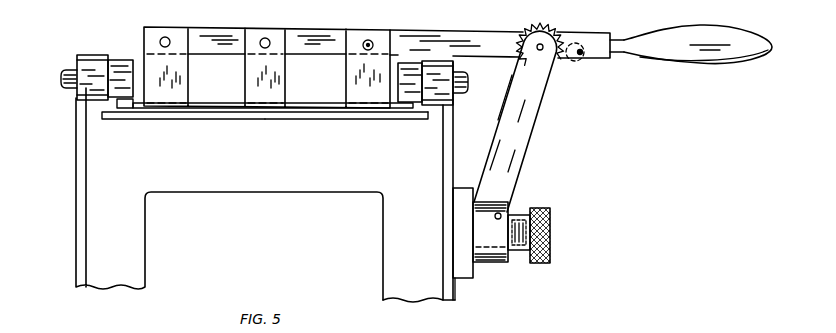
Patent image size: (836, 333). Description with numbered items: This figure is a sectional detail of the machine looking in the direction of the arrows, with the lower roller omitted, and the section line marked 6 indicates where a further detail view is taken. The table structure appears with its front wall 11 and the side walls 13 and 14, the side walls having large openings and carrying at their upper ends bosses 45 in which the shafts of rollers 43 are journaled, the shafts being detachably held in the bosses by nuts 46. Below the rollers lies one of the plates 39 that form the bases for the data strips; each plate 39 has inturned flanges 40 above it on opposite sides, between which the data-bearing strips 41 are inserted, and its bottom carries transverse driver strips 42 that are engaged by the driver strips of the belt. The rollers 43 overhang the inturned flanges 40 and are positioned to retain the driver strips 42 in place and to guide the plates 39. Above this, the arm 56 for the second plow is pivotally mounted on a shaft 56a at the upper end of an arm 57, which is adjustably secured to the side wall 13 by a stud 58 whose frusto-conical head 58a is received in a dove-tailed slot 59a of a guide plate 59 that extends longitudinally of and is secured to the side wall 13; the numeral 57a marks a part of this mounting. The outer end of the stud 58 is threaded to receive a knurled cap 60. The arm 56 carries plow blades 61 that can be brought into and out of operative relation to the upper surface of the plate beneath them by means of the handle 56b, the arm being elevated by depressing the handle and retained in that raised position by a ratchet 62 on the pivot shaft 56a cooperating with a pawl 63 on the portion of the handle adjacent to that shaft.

The section line 6- 6 is at (265, 248).
The front wall 11 is at (456, 294).
The side wall 13 is at (454, 151).
The side wall 14 is at (76, 176).
The plate 39 is at (212, 119).
The inturned flange 40 is at (124, 108).
The data-bearing strip 41 is at (233, 104).
The driver strip 42 is at (312, 115).
The roller 43 is at (119, 60).
The boss 45 is at (96, 55).
The nut 46 is at (62, 86).
The arm 56 is at (328, 31).
The shaft 56a is at (548, 67).
The handle 56b is at (700, 60).
The arm 57 is at (530, 117).
The pin 57a is at (500, 215).
The stud 58 is at (516, 222).
The frusto conical head 58a is at (470, 238).
The guide plate 59 is at (475, 272).
The dove-tailed slot 59a is at (470, 213).
The knurled cap 60 is at (525, 258).
The plow blade 61 is at (190, 84).
The ratchet 62 is at (524, 25).
The pawl 63 is at (572, 60).